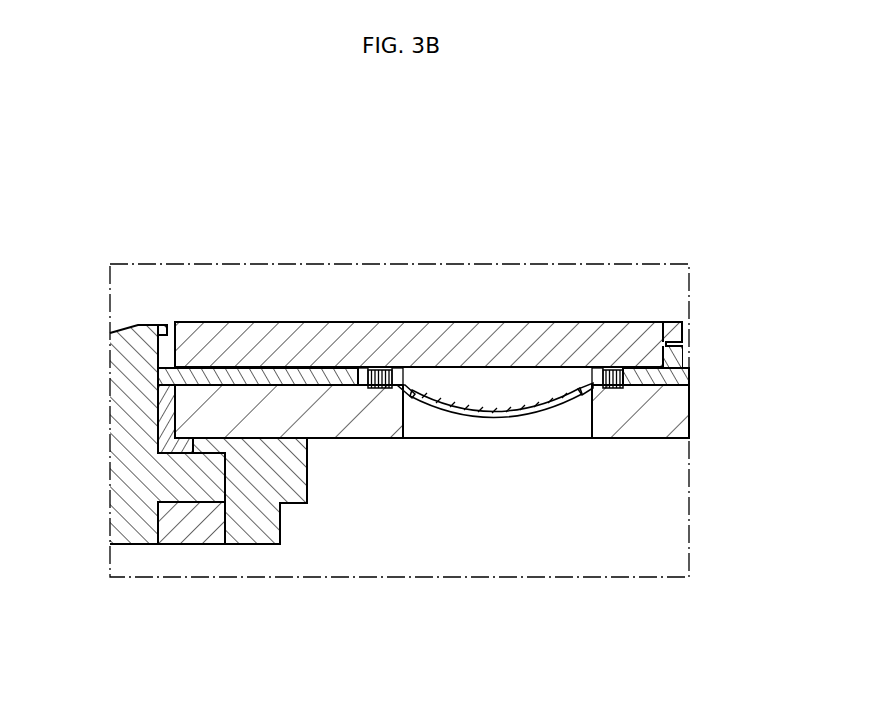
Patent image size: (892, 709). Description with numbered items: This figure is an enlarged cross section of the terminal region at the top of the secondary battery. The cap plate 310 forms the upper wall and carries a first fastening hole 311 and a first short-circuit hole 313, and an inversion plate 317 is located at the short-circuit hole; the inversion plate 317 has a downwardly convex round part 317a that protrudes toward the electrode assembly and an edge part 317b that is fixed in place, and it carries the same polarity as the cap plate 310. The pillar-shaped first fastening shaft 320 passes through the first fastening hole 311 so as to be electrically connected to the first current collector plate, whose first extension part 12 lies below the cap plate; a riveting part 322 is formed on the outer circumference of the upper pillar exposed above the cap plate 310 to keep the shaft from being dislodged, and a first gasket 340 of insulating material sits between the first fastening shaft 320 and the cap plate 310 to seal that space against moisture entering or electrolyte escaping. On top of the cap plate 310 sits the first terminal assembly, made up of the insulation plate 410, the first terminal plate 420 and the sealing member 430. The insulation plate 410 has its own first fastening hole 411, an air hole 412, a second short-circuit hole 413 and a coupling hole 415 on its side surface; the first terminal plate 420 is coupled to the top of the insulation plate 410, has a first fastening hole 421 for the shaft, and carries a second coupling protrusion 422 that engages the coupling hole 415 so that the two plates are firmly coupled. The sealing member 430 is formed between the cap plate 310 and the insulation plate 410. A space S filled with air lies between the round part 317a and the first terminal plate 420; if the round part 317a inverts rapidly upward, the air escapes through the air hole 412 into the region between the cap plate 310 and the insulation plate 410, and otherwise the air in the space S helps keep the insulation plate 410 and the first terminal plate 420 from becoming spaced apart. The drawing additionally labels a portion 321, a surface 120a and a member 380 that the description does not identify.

The first fastening shaft 320 is at (126, 431).
The lower portion of housing 321 is at (192, 488).
The riveting part 322 is at (168, 327).
The first fastening hole 421 is at (153, 345).
The bottom surface of housing 120a is at (157, 522).
The first extension part 12 is at (197, 532).
The support / adhesive member 380 is at (259, 537).
The first gasket 340 is at (163, 407).
The cap plate 310 is at (358, 540).
The first fastening hole 311 is at (165, 420).
The first short-circuit hole 313 is at (404, 417).
The inversion plate 317 is at (509, 540).
The round part 317a is at (505, 418).
The edge part 317b is at (586, 396).
The insulation plate 410 is at (400, 431).
The first terminal plate 420 is at (474, 292).
The second coupling protrusion 422 is at (663, 338).
The coupling hole 415 is at (682, 352).
The second short-circuit hole 413 is at (420, 368).
The first fastening hole 411 is at (157, 371).
The air hole 412 is at (369, 368).
The sealing member 430 is at (613, 395).
The space S is at (513, 386).